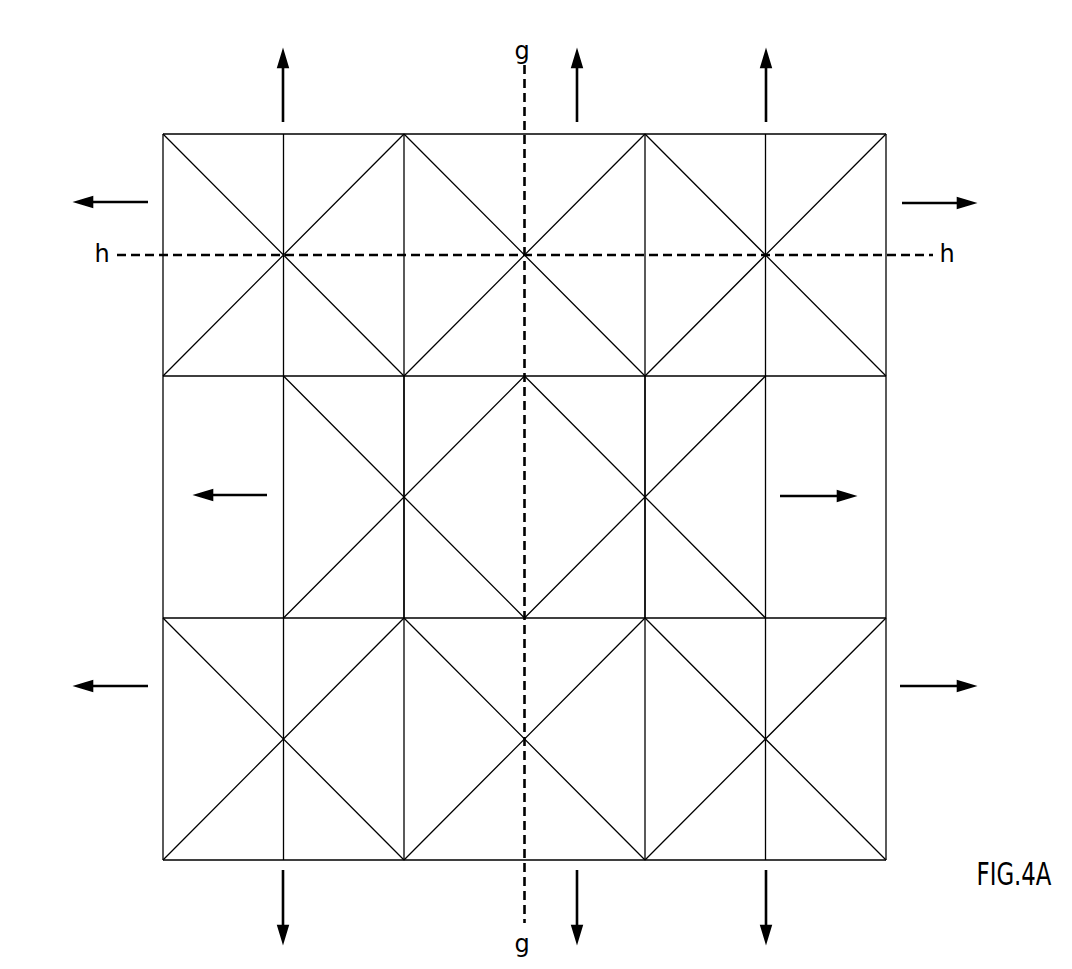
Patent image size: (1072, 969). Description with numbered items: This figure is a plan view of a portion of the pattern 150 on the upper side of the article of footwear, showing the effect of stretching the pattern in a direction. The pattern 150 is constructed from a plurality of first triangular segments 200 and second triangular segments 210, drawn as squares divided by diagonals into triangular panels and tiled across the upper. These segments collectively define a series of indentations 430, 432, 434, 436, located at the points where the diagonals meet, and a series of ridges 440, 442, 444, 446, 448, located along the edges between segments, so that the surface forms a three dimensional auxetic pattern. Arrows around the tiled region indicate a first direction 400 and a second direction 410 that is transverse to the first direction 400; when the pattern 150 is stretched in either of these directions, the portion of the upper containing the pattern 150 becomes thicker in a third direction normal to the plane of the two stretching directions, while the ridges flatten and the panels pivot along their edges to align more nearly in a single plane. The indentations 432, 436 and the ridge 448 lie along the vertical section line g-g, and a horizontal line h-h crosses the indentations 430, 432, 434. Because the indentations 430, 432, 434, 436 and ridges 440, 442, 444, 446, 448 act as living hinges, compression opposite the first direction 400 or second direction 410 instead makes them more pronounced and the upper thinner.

The pattern 150 is at (1001, 90).
The first triangular segments 200 is at (860, 786).
The second triangular segments 210 is at (814, 834).
The first direction 400 is at (927, 686).
The second direction 410 is at (795, 903).
The indentation 430 is at (247, 246).
The indentation 432 is at (496, 243).
The indentation 434 is at (812, 243).
The indentation 436 is at (494, 735).
The ridge 440 is at (163, 318).
The ridge 442 is at (404, 182).
The ridge 444 is at (646, 188).
The ridge 446 is at (887, 322).
The ridge 448 is at (525, 497).